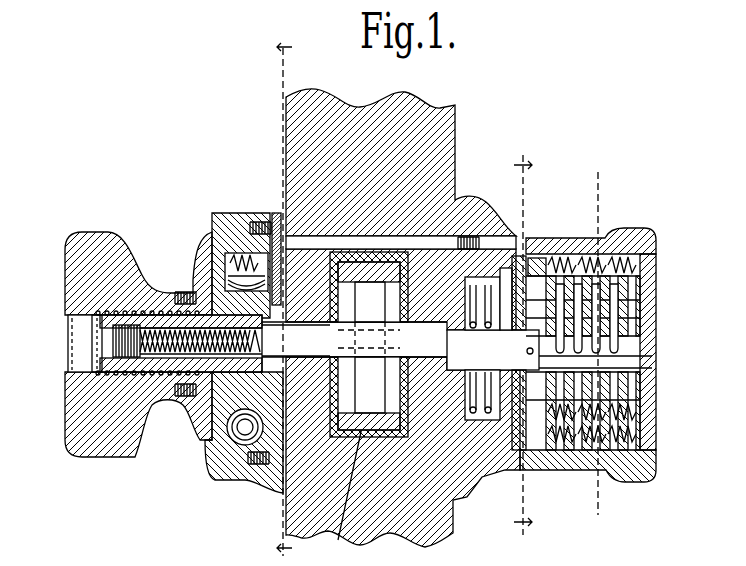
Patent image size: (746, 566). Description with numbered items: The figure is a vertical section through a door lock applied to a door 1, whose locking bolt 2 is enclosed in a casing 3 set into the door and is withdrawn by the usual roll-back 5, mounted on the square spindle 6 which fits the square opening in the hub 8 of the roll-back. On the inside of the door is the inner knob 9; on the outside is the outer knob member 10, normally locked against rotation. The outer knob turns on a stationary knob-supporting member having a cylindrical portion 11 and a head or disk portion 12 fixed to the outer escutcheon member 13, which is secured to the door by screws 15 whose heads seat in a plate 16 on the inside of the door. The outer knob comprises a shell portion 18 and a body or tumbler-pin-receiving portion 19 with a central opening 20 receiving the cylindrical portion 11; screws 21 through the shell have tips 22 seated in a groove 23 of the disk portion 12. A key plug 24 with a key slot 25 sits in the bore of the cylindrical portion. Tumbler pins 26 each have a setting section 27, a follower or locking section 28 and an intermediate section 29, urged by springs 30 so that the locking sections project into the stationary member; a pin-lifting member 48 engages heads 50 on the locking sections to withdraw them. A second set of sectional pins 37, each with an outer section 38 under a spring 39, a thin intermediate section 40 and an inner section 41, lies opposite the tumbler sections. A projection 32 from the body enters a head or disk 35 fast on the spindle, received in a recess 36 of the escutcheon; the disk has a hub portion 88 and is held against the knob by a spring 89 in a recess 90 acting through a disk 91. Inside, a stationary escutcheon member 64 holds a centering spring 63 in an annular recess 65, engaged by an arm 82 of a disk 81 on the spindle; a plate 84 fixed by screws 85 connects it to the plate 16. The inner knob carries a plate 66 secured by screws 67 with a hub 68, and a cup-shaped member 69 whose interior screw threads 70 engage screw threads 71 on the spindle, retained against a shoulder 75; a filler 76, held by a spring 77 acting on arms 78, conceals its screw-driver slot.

The door 1 is at (370, 140).
The locking bolt 2 is at (319, 293).
The casing 3 is at (343, 437).
The roll-back 5 is at (444, 345).
The spindle 6 is at (305, 533).
The hub 8 is at (390, 338).
The inner knob 9 is at (86, 240).
The outer knob member 10 is at (632, 236).
The cylindrical portion 11 is at (632, 337).
The head or disk portion 12 is at (545, 452).
The outer hub or escutcheon member 13 is at (480, 463).
The screws 15 is at (412, 234).
The plate 16 is at (290, 233).
The shell portion 18 is at (572, 440).
The body or tumbler-pin-receiving portion 19 is at (575, 466).
The central opening 20 is at (638, 393).
The screws 21 is at (528, 240).
The tips 22 is at (543, 257).
The groove 23 is at (547, 257).
The key plug 24 is at (655, 335).
The key slot 25 is at (645, 356).
The tumbler pins 26 is at (635, 303).
The setting section 27 is at (630, 345).
The follower or locking section 28 is at (632, 317).
The intermediate section 29 is at (628, 327).
The spring 30 is at (602, 263).
The projection 32 is at (512, 268).
The head or disk 35 is at (517, 460).
The recess 36 is at (502, 273).
The sectional pins 37 is at (640, 410).
The outer section 38 is at (657, 430).
The spring 39 is at (635, 457).
The thin intermediate section 40 is at (638, 403).
The inner section 41 is at (632, 383).
The pin-lifting member 48 is at (650, 275).
The heads or enlarged portions 50 is at (637, 290).
The centering spring 63 is at (238, 437).
The stationary escutcheon member 64 is at (252, 225).
The annular recess 65 is at (213, 417).
The plate 66 is at (187, 423).
The screws 67 is at (182, 293).
The hub 68 is at (213, 413).
The cup-shaped member 69 is at (110, 342).
The interior screw threads 70 is at (95, 375).
The screw threads 71 is at (163, 337).
The shoulder 75 is at (82, 317).
The filler 76 is at (70, 331).
The spring 77 is at (125, 312).
The arms 78 is at (90, 310).
The disk 81 is at (270, 322).
The arm 82 is at (235, 260).
The plate 84 is at (276, 222).
The screws 85 is at (262, 228).
The hub portion 88 is at (523, 360).
The spring 89 is at (440, 447).
The recess 90 is at (472, 440).
The disk 91 is at (515, 428).